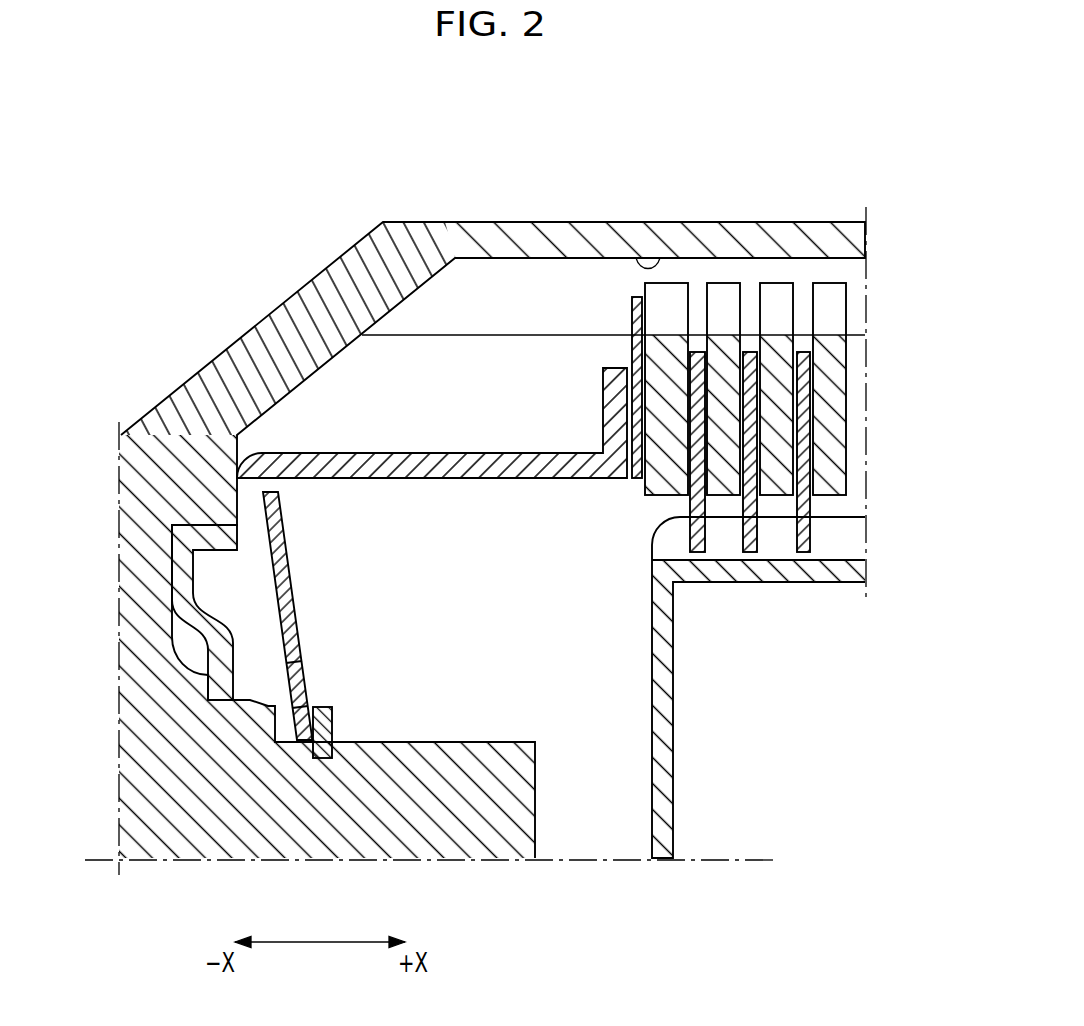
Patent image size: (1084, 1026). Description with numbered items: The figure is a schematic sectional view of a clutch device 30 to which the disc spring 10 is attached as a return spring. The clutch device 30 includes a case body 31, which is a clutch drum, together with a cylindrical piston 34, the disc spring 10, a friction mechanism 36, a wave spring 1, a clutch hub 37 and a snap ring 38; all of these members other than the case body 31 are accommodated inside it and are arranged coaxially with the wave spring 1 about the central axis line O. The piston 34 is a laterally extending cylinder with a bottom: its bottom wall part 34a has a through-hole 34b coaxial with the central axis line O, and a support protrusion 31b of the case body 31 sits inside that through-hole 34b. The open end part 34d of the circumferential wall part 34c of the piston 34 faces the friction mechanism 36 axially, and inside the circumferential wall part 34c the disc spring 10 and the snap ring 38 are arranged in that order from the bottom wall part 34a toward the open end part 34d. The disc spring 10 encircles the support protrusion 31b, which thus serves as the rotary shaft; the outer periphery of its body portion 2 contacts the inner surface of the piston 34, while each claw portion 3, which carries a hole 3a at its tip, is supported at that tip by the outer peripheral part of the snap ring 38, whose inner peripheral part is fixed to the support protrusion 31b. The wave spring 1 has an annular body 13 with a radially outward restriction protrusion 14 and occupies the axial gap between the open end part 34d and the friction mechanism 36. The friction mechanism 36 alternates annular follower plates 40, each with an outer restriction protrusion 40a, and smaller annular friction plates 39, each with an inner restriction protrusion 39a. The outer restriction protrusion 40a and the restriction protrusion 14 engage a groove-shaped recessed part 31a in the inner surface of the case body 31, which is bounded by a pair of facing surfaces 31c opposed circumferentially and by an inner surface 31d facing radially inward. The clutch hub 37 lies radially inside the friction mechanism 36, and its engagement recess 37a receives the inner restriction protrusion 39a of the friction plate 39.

The wave spring 1 is at (497, 267).
The body portion 2 is at (281, 528).
The claw portion 3 is at (295, 708).
The hole 3a is at (303, 674).
The disc spring 10 is at (342, 490).
The annular body 13 is at (633, 352).
The restriction protrusion 14 is at (631, 310).
The clutch device 30 is at (673, 212).
The case body 31 is at (707, 213).
The recessed part 31a is at (604, 284).
The support protrusion 31b is at (495, 741).
The facing surfaces 31c is at (568, 278).
The inner surface 31d is at (637, 258).
The piston 34 is at (295, 453).
The bottom wall part 34a is at (177, 563).
The through-hole 34b is at (210, 715).
The circumferential wall part 34c is at (434, 452).
The open end part 34d is at (603, 402).
The friction mechanism 36 is at (848, 285).
The clutch hub 37 is at (846, 517).
The engagement recess 37a is at (663, 543).
The snap ring 38 is at (318, 759).
The friction plate 39 is at (800, 400).
The inner restriction protrusion 39a is at (748, 550).
The follower plate 40 is at (838, 353).
The outer restriction protrusion 40a is at (773, 282).
The central axis line O is at (739, 860).